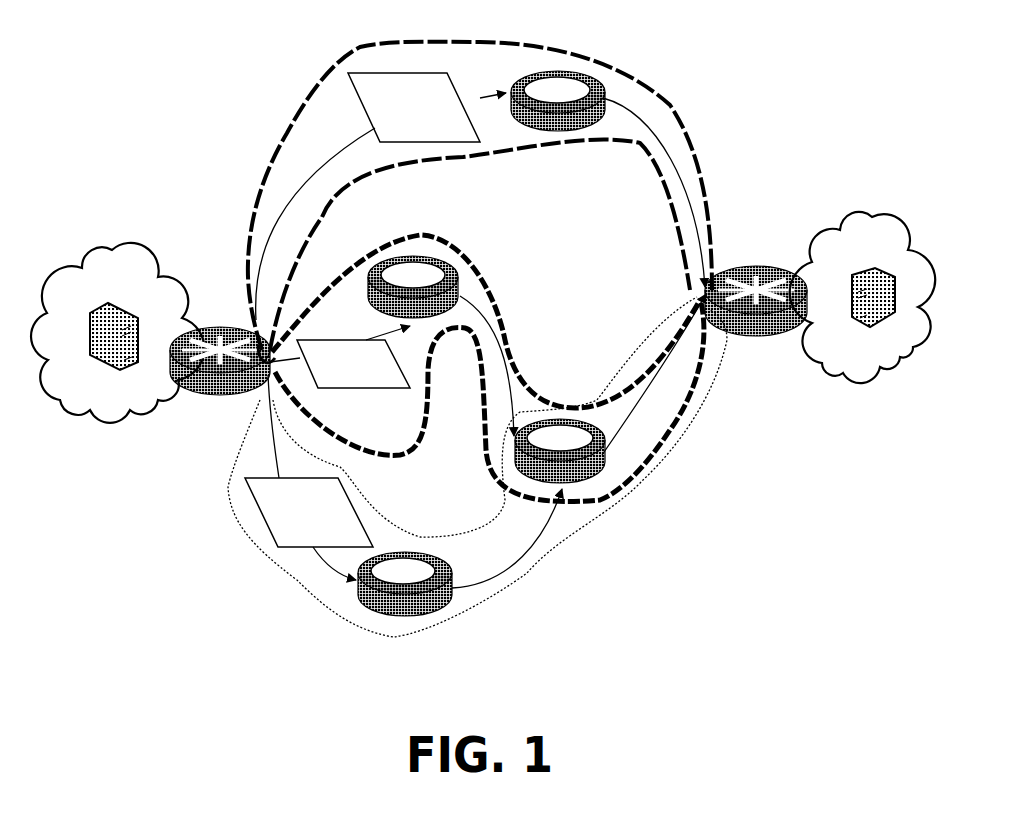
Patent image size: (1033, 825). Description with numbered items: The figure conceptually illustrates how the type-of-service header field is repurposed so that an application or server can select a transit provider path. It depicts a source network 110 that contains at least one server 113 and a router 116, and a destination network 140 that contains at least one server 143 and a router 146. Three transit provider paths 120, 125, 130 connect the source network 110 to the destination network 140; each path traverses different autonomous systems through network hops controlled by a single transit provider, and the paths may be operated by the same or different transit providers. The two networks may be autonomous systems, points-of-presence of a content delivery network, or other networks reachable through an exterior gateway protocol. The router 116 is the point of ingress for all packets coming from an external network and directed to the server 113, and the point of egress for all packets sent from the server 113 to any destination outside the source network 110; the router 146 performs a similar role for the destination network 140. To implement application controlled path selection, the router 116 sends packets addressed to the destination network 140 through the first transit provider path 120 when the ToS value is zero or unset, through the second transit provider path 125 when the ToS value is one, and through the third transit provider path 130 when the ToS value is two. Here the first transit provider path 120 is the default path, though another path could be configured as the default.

The source network 110 is at (117, 312).
The server 113 is at (103, 401).
The router 116 is at (207, 429).
The first transit provider path 120 is at (630, 75).
The second transit provider path 125 is at (480, 270).
The third transit provider path 130 is at (500, 598).
The destination network 140 is at (856, 273).
The server 143 is at (857, 354).
The router 146 is at (740, 366).